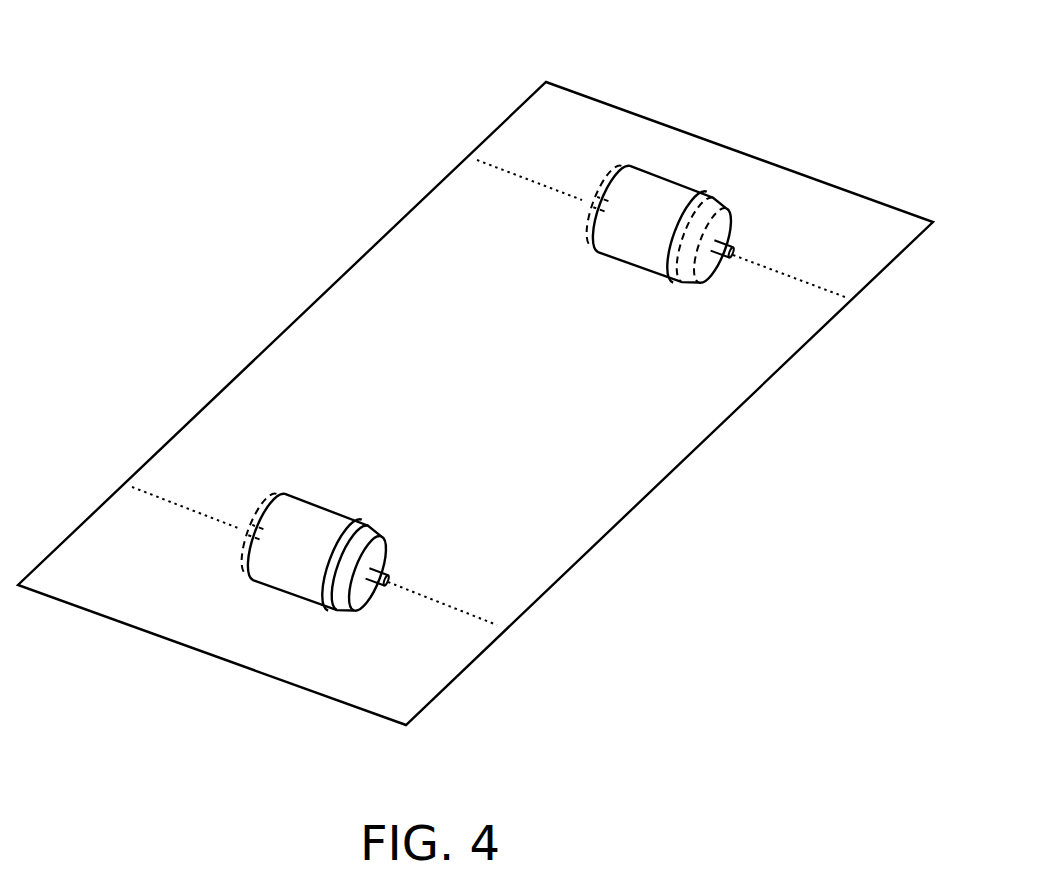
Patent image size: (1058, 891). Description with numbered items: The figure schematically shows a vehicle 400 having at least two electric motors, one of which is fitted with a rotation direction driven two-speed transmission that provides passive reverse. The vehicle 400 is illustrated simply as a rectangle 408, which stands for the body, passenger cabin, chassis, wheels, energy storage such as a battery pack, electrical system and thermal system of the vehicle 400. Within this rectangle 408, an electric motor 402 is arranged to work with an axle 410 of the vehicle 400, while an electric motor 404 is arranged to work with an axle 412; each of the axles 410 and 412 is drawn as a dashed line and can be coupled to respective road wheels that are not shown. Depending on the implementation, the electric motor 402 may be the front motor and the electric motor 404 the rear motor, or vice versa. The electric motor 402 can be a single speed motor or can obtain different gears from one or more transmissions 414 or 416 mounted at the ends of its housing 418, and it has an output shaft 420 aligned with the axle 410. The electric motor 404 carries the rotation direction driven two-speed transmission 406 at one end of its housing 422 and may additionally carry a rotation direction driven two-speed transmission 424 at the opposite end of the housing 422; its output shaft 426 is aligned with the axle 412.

The vehicle 400 is at (686, 40).
The electric motor 402 is at (660, 175).
The electric motor 404 is at (308, 500).
The rotation direction driven two-speed transmission 406 is at (387, 540).
The rectangle 408 is at (385, 237).
The axle 410 is at (497, 165).
The axle 412 is at (152, 493).
The transmission 414 is at (735, 220).
The transmission 416 is at (613, 173).
The housing 418 is at (717, 200).
The output shaft 420 is at (733, 253).
The housing 422 is at (368, 518).
The rotation direction driven two-speed transmission 424 is at (267, 500).
The output shaft 426 is at (387, 578).